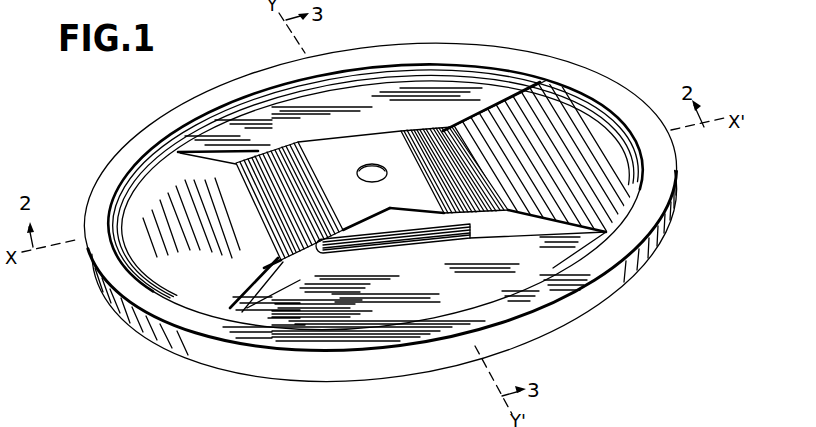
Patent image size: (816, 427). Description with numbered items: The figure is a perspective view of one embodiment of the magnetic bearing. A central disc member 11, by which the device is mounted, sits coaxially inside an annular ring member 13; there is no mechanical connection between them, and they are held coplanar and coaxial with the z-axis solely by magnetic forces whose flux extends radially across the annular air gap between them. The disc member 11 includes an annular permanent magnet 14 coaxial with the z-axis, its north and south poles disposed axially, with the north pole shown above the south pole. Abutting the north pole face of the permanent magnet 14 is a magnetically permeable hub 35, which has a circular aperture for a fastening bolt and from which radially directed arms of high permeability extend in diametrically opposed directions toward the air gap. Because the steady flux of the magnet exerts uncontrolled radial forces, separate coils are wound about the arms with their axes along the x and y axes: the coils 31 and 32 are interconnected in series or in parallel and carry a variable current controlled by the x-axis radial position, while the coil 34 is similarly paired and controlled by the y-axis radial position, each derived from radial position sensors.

The disc member 11 is at (552, 108).
The ring member 13 is at (664, 187).
The annular permanent magnet 14 is at (412, 218).
The coil 31 is at (278, 215).
The coil 32 is at (469, 152).
The coil 34 is at (404, 236).
The hub 35 is at (348, 167).